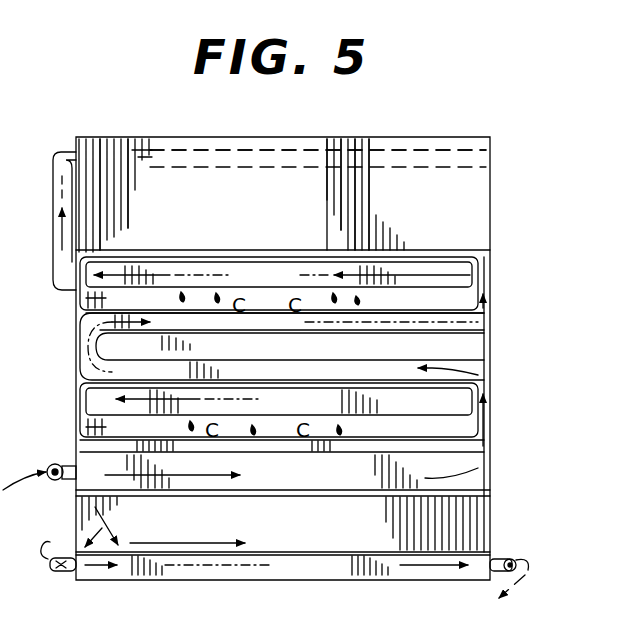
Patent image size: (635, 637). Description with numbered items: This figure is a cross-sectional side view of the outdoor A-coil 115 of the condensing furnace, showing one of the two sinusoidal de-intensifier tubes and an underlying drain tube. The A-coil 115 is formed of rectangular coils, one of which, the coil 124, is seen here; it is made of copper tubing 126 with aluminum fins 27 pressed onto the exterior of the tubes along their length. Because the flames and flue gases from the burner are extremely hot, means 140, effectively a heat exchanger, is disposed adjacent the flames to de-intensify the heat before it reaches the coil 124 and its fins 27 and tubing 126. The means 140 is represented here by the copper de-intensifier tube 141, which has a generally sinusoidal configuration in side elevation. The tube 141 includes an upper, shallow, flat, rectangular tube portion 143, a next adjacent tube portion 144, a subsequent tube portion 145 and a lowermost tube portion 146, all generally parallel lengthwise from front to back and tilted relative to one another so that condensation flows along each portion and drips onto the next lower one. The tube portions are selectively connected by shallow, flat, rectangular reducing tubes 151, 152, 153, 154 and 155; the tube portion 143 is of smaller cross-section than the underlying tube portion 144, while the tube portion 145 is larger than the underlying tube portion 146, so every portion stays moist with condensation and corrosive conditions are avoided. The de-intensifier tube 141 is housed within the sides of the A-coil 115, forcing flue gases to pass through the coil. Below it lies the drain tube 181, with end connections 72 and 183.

The outdoor coil 115 is at (433, 106).
The de-intensifying means 140 is at (345, 132).
The copper tubes 126 is at (455, 155).
The rectangular coil 124 is at (465, 225).
The fins 27 is at (118, 175).
The reducing tube 154 is at (47, 150).
The reducing tube 155 is at (89, 176).
The de-intensifier tube 141 is at (268, 250).
The upper tube portion 143 is at (279, 274).
The next adjacent tube portion 144 is at (285, 322).
The subsequent tube portion 145 is at (279, 410).
The lowermost tube portion 146 is at (283, 472).
The reducing tube 151 is at (488, 304).
The reducing tube 152 is at (80, 340).
The reducing tube 153 is at (488, 432).
The inlet fitting 72 is at (68, 488).
The bottom channel 181 is at (272, 580).
The outlet fitting 183 is at (497, 560).